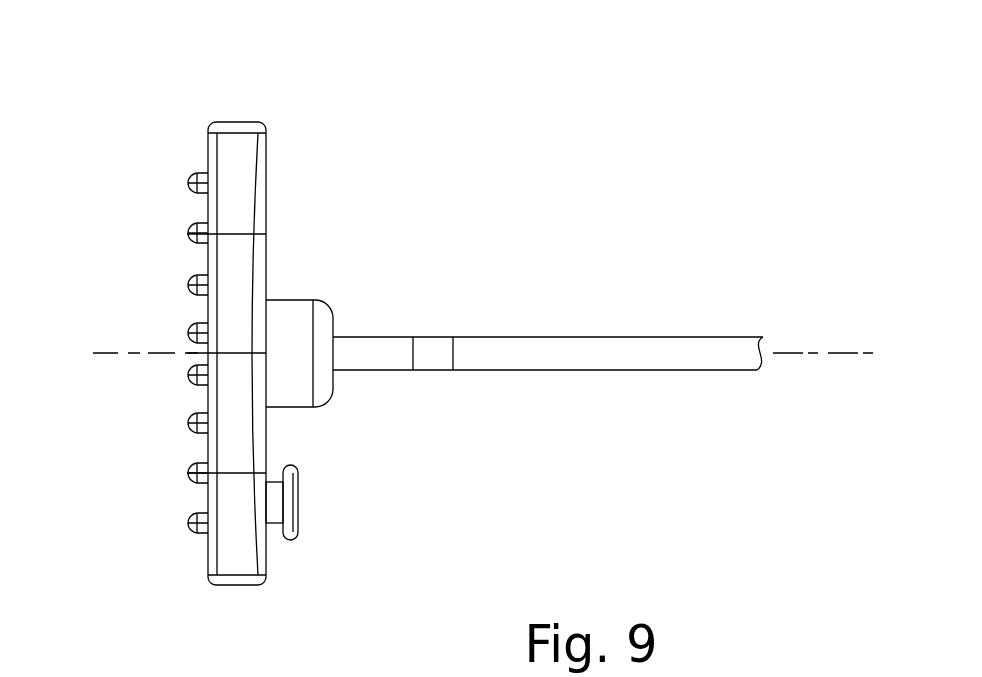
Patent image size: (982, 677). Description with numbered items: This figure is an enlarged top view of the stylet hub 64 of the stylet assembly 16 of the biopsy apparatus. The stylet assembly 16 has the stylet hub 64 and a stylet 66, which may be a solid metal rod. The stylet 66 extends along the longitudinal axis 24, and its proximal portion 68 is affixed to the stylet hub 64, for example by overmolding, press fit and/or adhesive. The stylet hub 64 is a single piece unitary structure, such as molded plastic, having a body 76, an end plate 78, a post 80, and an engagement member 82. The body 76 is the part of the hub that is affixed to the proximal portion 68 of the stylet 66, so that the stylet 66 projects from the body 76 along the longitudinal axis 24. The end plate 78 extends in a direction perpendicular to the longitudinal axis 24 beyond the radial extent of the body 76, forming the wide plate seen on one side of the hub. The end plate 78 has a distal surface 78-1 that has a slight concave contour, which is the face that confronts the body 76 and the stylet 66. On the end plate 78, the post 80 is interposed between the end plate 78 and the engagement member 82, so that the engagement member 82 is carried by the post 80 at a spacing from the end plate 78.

The stylet assembly 16 is at (90, 253).
The longitudinal axis 24 is at (118, 353).
The stylet hub 64 is at (170, 112).
The stylet 66 is at (665, 337).
The proximal portion 68 is at (443, 301).
The body 76 is at (292, 300).
The end plate 78 is at (238, 122).
The distal surface 78-1 is at (263, 425).
The post 80 is at (275, 523).
The engagement member 82 is at (300, 467).